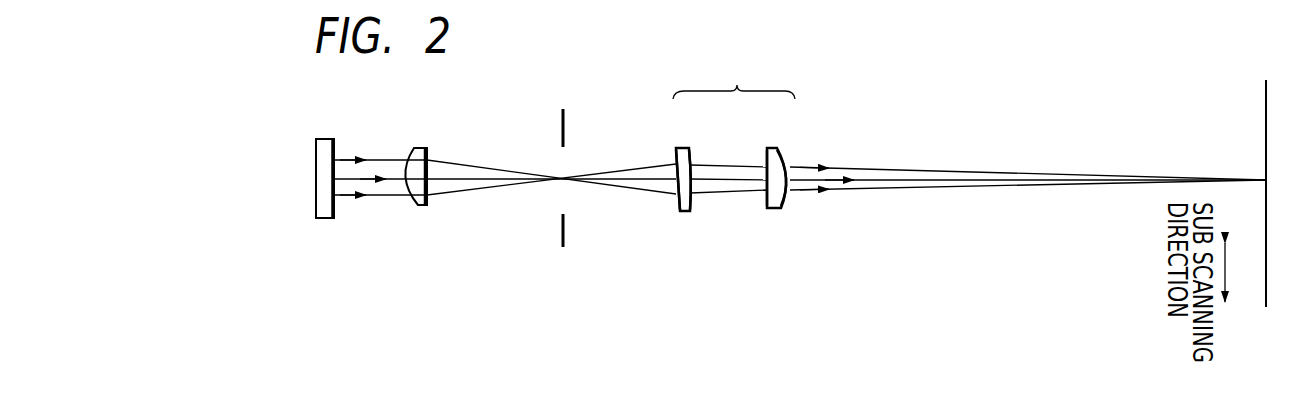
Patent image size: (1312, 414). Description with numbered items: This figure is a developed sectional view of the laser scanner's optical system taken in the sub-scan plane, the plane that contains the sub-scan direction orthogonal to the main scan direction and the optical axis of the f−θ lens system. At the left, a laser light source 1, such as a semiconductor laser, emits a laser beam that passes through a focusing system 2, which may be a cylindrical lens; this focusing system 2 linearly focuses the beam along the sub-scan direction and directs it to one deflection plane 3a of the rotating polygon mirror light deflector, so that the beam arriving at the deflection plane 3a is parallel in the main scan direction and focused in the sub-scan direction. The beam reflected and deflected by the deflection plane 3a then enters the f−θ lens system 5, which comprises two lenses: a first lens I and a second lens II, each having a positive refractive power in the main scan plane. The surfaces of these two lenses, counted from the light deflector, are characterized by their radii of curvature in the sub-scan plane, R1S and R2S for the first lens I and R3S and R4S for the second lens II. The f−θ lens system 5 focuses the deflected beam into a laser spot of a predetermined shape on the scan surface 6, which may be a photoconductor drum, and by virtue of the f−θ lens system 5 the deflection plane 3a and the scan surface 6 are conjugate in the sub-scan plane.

The laser light source 1 is at (323, 219).
The focusing system 2 is at (418, 206).
The deflection plane 3a is at (566, 124).
The f−θ lens system 5 is at (721, 162).
The first lens I is at (683, 147).
The second lens II is at (773, 147).
The radius of curvature in the sub-scan plane of the first lens surface R1S is at (676, 205).
The radius of curvature in the sub-scan plane of the second lens surface R2S is at (690, 212).
The radius of curvature in the sub-scan plane of the third lens surface R3S is at (768, 205).
The radius of curvature in the sub-scan plane of the fourth lens surface R4S is at (793, 202).
The scan surface 6 is at (1266, 110).